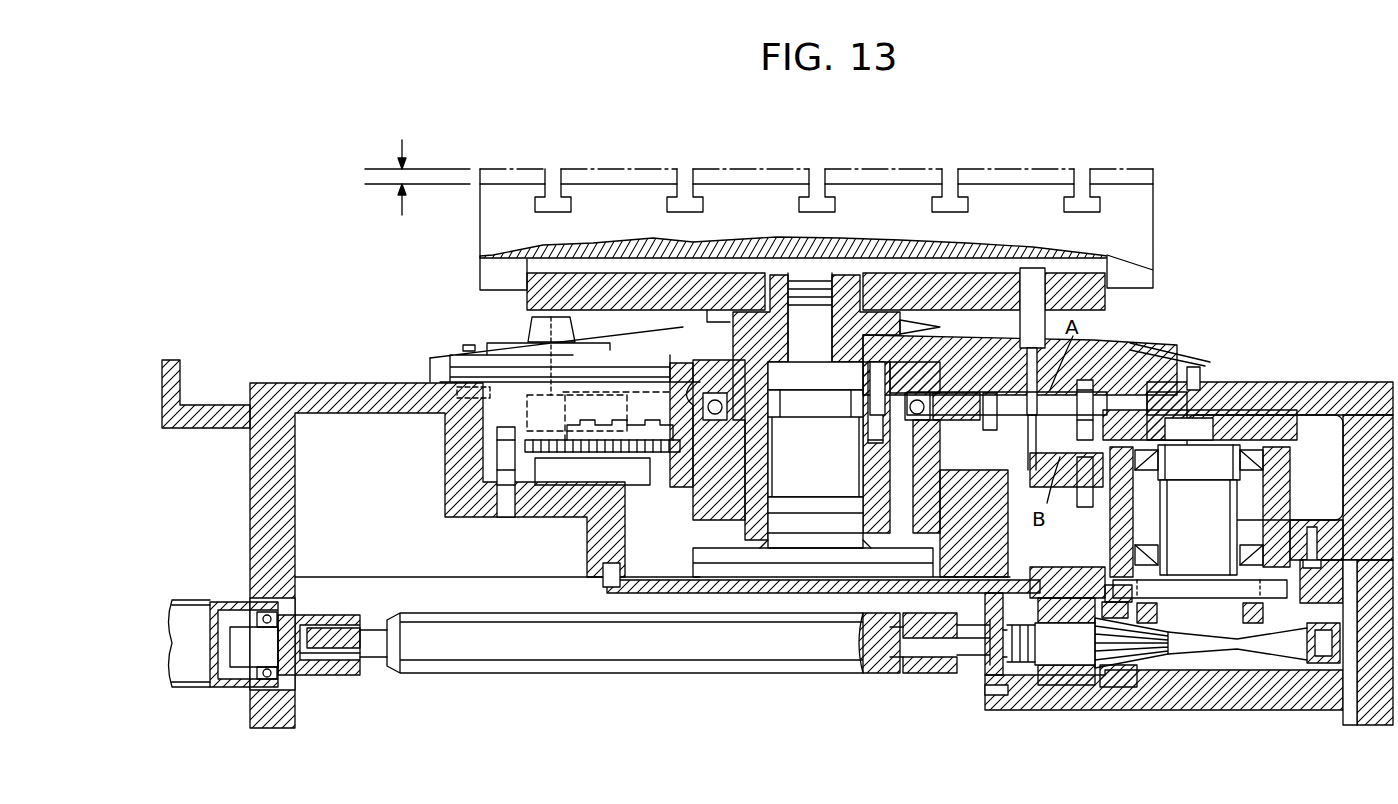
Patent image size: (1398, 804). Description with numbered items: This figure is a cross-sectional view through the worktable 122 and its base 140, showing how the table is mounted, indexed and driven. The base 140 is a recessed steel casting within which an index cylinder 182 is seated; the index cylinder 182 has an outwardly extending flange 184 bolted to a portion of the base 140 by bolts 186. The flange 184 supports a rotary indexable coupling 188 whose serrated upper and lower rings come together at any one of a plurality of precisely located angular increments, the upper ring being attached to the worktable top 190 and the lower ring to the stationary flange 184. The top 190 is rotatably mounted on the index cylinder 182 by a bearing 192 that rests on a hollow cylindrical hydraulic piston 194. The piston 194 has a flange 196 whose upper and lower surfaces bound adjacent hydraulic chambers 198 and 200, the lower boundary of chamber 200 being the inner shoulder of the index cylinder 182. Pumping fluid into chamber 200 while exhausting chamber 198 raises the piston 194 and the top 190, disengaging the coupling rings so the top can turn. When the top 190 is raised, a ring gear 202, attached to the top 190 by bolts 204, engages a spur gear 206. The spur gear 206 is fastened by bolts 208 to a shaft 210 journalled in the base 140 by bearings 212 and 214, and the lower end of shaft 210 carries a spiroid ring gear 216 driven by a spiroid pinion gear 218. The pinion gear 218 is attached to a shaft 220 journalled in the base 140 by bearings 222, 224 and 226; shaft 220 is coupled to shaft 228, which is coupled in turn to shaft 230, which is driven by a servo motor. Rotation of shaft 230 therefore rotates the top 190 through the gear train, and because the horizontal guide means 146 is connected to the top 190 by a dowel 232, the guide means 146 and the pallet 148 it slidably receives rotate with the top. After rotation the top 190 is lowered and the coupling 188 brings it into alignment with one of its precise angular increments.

The worktable 122 is at (340, 350).
The base 140 is at (257, 498).
The horizontal guide means 146 is at (923, 285).
The pallet 148 is at (497, 227).
The index cylinder 182 is at (947, 592).
The flange 184 is at (1130, 483).
The bolts 186 is at (1110, 496).
The rotary indexable coupling 188 is at (545, 425).
The worktable top 190 is at (1097, 348).
The bearing 192 is at (698, 355).
The hollow cylindrical hydraulic piston 194 is at (935, 462).
The flange 196 is at (963, 457).
The hydraulic chamber 198 is at (875, 437).
The hydraulic chamber 200 is at (937, 472).
The ring gear 202 is at (623, 440).
The bolts 204 is at (1102, 388).
The spur gear 206 is at (1287, 427).
The bolts 208 is at (1185, 443).
The shaft 210 is at (1237, 513).
The bearing 212 is at (1260, 452).
The bearing 214 is at (1262, 538).
The spiroid ring gear 216 is at (1283, 627).
The spiroid pinion gear 218 is at (1140, 660).
The shaft 220 is at (933, 650).
The bearing 222 is at (1052, 687).
The bearing 224 is at (1060, 688).
The bearing 226 is at (983, 667).
The shaft 228 is at (698, 642).
The shaft 230 is at (250, 648).
The dowel 232 is at (1031, 273).